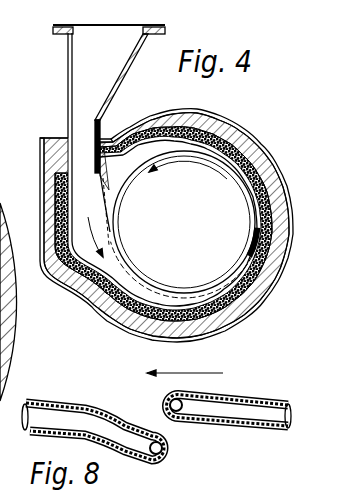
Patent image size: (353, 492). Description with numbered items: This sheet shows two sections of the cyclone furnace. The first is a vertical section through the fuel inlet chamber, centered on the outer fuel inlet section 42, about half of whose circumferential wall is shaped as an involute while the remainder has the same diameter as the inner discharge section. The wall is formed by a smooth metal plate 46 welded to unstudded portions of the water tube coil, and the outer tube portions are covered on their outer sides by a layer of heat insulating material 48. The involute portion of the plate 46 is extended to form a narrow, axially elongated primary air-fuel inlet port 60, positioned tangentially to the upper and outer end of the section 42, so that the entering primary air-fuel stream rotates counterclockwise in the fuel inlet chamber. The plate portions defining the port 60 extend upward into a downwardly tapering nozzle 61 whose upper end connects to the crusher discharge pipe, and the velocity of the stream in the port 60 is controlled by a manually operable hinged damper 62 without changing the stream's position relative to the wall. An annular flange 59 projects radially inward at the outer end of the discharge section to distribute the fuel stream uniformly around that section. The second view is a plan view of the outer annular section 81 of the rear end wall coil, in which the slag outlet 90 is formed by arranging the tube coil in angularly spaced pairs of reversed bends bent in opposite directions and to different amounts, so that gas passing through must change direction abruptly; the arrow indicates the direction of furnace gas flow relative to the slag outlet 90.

In FIG. 4, the nozzle 61 is at (70, 52).
In FIG. 4, the primary air-fuel inlet port 60 is at (95, 150).
In FIG. 4, the hinged damper 62 is at (95, 163).
In FIG. 4, the heat insulating material 48 is at (255, 145).
In FIG. 4, the fuel inlet section 42 is at (193, 230).
In FIG. 4, the metal plate 46 is at (108, 292).
In FIG. 4, the annular flange 59 is at (174, 296).
In FIG. 8, the outer annular section 81 is at (32, 402).
In FIG. 8, the slag outlet 90 is at (172, 428).